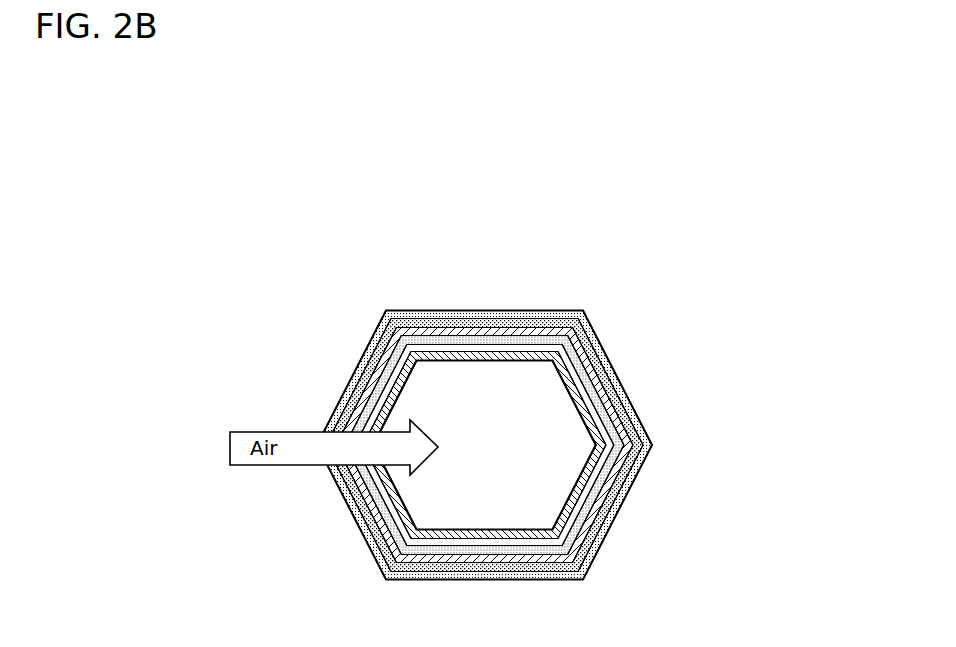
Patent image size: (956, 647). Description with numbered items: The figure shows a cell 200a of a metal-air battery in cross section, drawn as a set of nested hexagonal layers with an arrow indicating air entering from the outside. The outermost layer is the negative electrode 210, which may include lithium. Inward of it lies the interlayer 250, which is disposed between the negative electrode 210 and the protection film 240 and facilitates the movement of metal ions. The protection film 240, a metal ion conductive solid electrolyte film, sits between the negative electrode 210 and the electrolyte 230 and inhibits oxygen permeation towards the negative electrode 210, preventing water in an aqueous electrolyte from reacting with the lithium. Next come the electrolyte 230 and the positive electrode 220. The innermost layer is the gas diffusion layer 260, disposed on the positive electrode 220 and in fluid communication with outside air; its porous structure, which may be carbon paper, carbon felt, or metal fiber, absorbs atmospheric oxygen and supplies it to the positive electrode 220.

The cell 200a is at (767, 313).
The negative electrode 210 is at (577, 315).
The interlayer 250 is at (580, 343).
The electrolyte 230 is at (590, 375).
The protection film 240 is at (602, 405).
The positive electrode 220 is at (617, 433).
The gas diffusion layer 260 is at (628, 453).